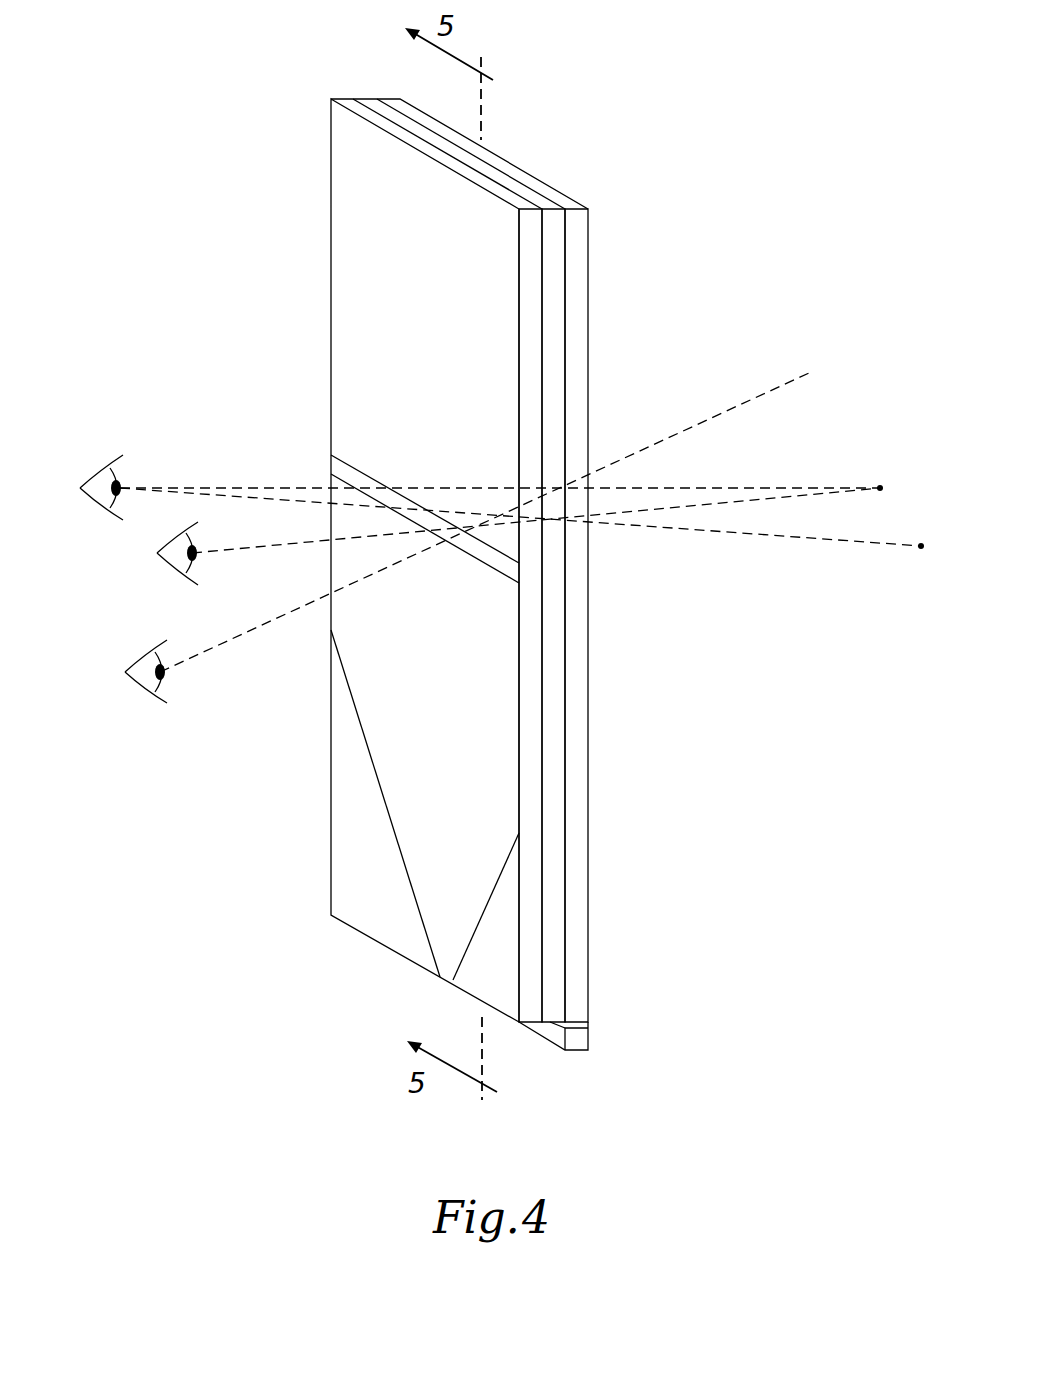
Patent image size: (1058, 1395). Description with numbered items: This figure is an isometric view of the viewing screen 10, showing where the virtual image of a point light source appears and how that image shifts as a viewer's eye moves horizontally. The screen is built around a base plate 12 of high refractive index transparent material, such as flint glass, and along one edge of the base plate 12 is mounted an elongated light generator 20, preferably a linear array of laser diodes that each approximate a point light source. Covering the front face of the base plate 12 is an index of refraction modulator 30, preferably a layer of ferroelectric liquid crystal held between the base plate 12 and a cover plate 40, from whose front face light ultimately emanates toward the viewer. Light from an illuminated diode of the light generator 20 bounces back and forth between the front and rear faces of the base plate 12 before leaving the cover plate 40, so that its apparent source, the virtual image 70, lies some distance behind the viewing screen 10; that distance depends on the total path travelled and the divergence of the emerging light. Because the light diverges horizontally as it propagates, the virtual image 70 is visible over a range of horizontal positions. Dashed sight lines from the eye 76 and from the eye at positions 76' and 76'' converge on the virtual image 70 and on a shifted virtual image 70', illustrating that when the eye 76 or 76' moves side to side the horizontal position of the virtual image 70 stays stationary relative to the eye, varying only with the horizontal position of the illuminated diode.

The viewing screen 10 is at (480, 518).
The base plate 12 is at (577, 212).
The light generator 20 is at (577, 1050).
The index of refraction modulator 30 is at (552, 212).
The cover plate 40 is at (527, 212).
The virtual image 70 is at (510, 481).
The virtual image 70' is at (522, 555).
The eye 76 is at (155, 570).
The eye position 76' is at (94, 467).
The eye position 76'' is at (154, 699).